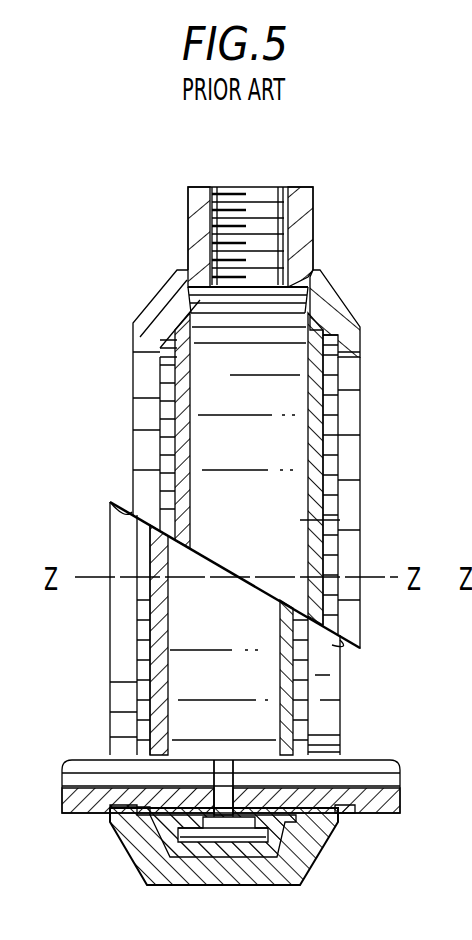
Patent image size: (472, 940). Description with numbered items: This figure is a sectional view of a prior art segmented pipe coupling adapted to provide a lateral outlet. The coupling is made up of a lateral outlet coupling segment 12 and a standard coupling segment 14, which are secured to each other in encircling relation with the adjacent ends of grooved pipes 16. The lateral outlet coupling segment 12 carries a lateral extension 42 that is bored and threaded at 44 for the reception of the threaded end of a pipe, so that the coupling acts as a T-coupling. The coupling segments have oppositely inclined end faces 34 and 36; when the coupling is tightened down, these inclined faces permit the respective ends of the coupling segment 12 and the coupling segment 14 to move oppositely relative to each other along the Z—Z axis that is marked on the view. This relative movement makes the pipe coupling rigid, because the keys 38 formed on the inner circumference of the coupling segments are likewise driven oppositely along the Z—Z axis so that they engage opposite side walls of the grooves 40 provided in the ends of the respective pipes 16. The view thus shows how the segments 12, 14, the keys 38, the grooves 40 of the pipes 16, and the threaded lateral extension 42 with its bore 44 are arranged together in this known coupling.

The lateral outlet coupling segment 12 is at (362, 477).
The standard coupling segment 14 is at (322, 850).
The grooved pipe 16 is at (64, 762).
The inclined end face 34 is at (112, 520).
The inclined end face 36 is at (340, 640).
The key 38 is at (133, 358).
The groove 40 is at (117, 800).
The lateral extension 42 is at (313, 230).
The threaded bore 44 is at (258, 205).